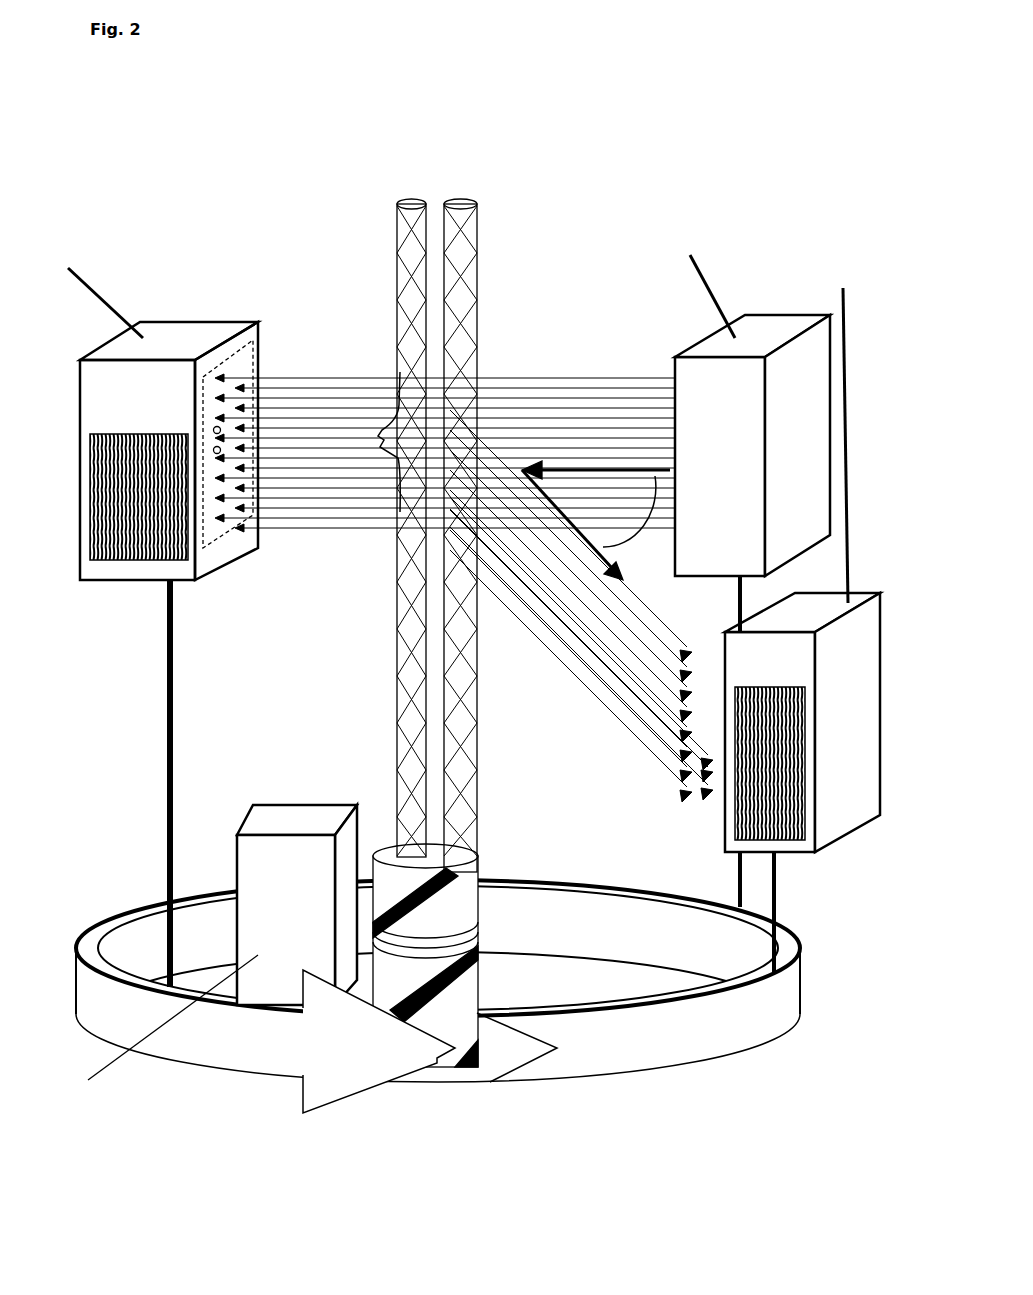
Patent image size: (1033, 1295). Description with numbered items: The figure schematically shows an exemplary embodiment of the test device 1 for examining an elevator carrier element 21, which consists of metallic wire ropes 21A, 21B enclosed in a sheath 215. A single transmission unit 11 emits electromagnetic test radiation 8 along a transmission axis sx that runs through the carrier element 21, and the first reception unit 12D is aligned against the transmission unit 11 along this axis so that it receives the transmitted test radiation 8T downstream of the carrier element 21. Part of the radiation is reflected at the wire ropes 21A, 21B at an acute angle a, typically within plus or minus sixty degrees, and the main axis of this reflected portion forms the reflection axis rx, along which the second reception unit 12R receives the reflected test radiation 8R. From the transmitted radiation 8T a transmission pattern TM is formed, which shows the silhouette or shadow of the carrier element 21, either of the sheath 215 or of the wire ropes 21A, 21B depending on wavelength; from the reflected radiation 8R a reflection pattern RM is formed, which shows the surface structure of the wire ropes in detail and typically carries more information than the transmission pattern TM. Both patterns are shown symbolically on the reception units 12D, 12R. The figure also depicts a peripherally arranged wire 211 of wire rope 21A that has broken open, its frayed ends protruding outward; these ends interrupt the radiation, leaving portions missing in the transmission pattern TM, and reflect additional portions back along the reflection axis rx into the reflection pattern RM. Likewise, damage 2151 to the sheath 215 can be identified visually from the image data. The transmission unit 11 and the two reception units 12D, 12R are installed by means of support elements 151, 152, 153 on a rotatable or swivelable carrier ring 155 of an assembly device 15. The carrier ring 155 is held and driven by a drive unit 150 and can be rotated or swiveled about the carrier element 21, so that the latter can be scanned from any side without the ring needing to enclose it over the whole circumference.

The test device 1 is at (210, 223).
The carrier element 21 is at (435, 520).
The wire rope 21A is at (395, 697).
The wire rope 21B is at (440, 705).
The wire 211 is at (383, 427).
The electromagnetic test radiation 8 is at (464, 541).
The test radiation received along the transmission axis 8T is at (328, 532).
The test radiation received along the reflection axis 8R is at (583, 683).
The transmission unit 11 is at (728, 390).
The first reception unit 12D is at (136, 405).
The second reception unit 12R is at (802, 551).
The transmission pattern TM is at (130, 562).
The reflection pattern RM is at (807, 770).
The assembly device 15 is at (705, 1090).
The drive unit 150 is at (197, 971).
The support element 151 is at (735, 882).
The support element 152 is at (778, 888).
The support element 153 is at (178, 630).
The carrier ring 155 is at (770, 1048).
The sheath 215 is at (480, 875).
The damage to the sheath 2151 is at (480, 917).
The transmission axis sx is at (597, 465).
The reflection axis rx is at (577, 542).
The acute angle a is at (589, 525).